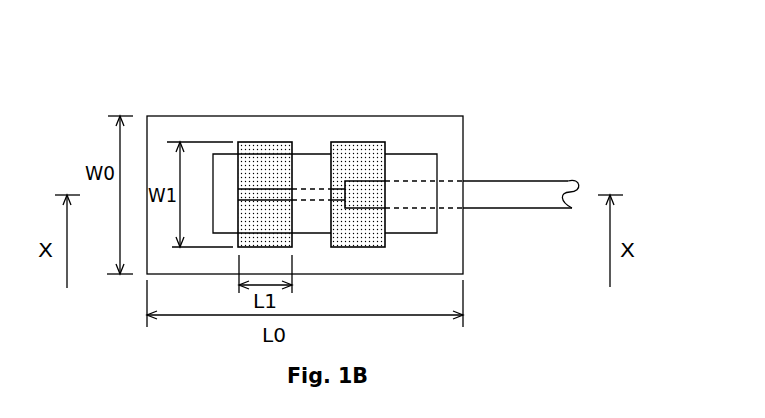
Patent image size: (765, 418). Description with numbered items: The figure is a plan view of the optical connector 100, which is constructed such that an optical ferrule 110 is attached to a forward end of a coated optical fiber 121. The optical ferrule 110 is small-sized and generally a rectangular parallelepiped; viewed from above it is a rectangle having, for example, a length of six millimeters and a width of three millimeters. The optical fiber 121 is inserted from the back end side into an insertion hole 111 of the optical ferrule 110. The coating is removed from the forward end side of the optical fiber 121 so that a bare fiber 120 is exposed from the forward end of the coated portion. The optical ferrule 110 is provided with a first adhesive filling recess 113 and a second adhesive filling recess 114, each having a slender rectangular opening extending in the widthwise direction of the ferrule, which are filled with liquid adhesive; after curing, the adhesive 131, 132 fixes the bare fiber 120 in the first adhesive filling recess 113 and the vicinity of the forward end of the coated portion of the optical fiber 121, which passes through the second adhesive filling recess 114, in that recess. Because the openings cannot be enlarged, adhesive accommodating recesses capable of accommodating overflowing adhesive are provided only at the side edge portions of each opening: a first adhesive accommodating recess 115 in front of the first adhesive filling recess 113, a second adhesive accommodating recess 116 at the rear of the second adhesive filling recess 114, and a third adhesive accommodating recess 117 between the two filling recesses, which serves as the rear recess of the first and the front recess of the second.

The optical connector 100 is at (328, 140).
The optical ferrule 110 is at (144, 101).
The insertion hole 111 is at (482, 196).
The first adhesive filling recess 113 is at (250, 126).
The second adhesive filling recess 114 is at (382, 130).
The first adhesive accommodating recess 115 is at (229, 157).
The second adhesive accommodating recess 116 is at (437, 173).
The third adhesive accommodating recess 117 is at (327, 161).
The bare fiber 120 is at (306, 192).
The optical fiber 121 is at (517, 195).
The adhesive 131 is at (273, 147).
The adhesive 132 is at (347, 182).